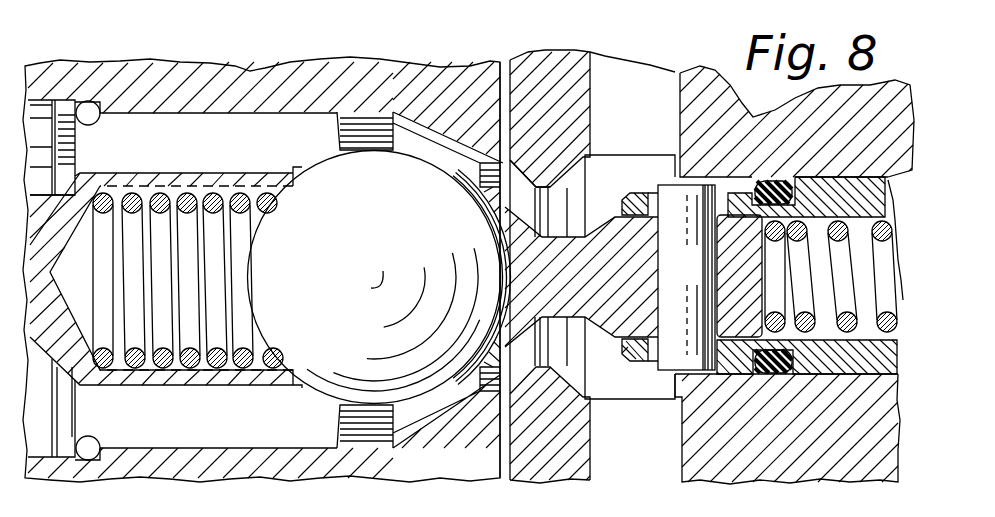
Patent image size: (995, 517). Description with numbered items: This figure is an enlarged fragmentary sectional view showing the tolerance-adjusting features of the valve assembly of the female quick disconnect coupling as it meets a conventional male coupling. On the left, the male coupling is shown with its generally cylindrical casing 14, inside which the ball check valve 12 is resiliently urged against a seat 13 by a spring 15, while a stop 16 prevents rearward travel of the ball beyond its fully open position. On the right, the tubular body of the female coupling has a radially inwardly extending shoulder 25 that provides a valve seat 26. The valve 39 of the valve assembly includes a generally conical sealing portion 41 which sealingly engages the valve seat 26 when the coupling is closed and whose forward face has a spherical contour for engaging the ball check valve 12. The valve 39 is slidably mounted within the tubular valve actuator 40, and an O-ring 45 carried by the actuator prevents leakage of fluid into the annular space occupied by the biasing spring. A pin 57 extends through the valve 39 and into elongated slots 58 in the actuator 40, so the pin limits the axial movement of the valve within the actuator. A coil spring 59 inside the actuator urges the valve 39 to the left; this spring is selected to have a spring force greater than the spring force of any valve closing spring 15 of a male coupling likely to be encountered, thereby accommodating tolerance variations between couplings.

The ball check valve 12 is at (348, 311).
The seat 13 is at (420, 125).
The casing 14 is at (253, 70).
The spring 15 is at (230, 368).
The stop 16 is at (323, 157).
The shoulder 25 is at (568, 78).
The valve seat 26 is at (520, 160).
The valve 39 is at (612, 285).
The tubular valve actuator 40 is at (887, 178).
The conical sealing portion 41 is at (493, 223).
The O-ring 45 is at (768, 180).
The pin 57 is at (696, 275).
The elongated slots 58 is at (650, 195).
The coil spring 59 is at (903, 307).